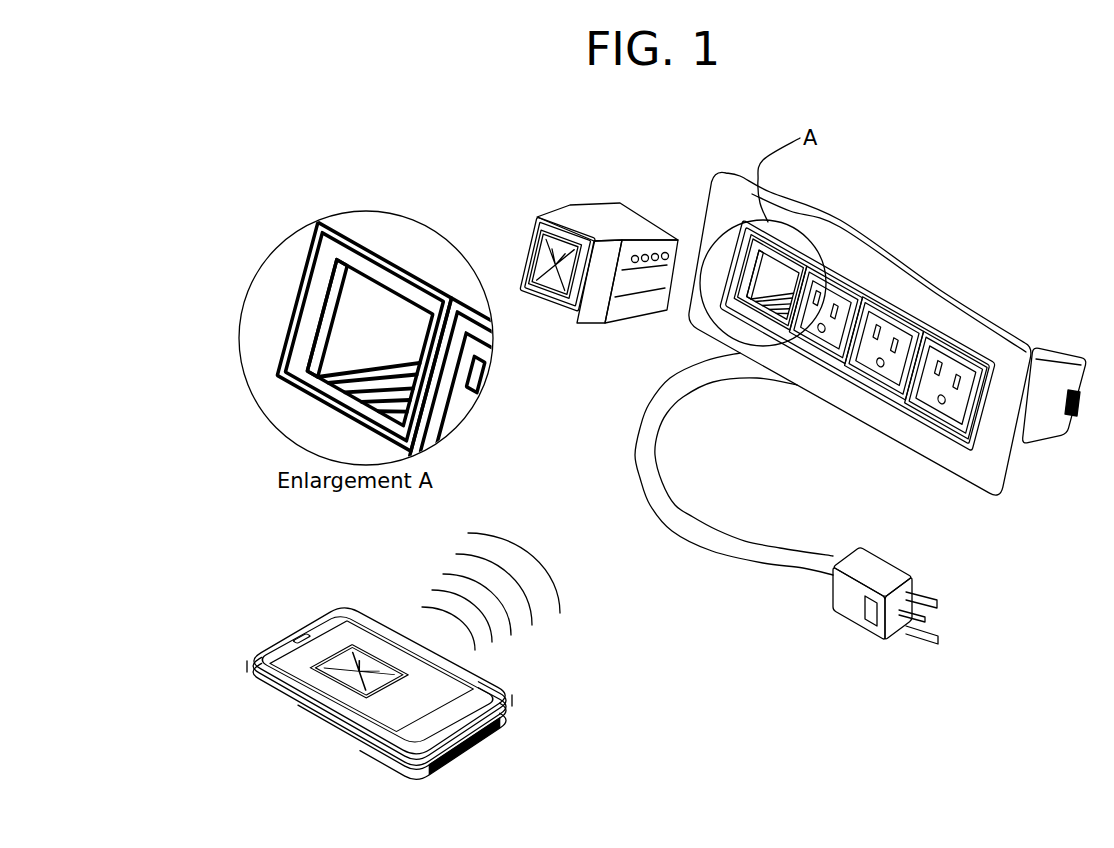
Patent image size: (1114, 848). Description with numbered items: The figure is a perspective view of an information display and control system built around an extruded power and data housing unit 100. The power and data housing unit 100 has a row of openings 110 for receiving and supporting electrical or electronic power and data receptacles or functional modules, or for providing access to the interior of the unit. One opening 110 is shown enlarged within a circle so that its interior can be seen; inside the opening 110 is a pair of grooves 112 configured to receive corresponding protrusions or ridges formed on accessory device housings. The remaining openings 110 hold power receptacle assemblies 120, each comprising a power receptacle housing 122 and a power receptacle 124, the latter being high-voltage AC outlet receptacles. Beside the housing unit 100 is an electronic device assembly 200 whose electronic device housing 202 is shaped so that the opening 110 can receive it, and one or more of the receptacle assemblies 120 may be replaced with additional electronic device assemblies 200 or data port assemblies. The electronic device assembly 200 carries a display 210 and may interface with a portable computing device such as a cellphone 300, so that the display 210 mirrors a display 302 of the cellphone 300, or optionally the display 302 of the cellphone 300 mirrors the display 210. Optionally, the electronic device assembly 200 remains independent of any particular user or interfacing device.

The power and data housing unit 100 is at (887, 348).
The opening 110 is at (364, 336).
The grooves 112 is at (378, 302).
The power receptacle assembly 120 is at (927, 395).
The power receptacle housing 122 is at (931, 357).
The power receptacle 124 is at (914, 345).
The electronic device assembly 200 is at (589, 254).
The electronic device housing 202 is at (557, 264).
The display 210 is at (555, 264).
The cellphone 300 is at (391, 702).
The display 302 is at (359, 671).